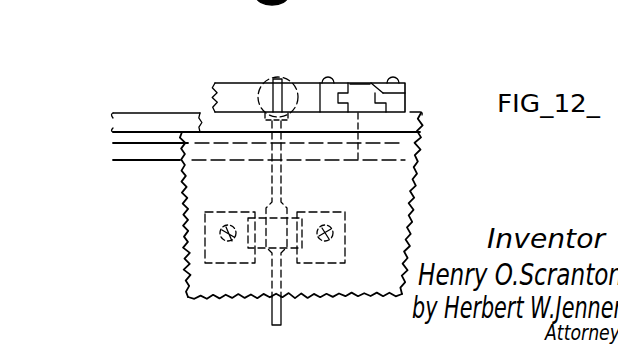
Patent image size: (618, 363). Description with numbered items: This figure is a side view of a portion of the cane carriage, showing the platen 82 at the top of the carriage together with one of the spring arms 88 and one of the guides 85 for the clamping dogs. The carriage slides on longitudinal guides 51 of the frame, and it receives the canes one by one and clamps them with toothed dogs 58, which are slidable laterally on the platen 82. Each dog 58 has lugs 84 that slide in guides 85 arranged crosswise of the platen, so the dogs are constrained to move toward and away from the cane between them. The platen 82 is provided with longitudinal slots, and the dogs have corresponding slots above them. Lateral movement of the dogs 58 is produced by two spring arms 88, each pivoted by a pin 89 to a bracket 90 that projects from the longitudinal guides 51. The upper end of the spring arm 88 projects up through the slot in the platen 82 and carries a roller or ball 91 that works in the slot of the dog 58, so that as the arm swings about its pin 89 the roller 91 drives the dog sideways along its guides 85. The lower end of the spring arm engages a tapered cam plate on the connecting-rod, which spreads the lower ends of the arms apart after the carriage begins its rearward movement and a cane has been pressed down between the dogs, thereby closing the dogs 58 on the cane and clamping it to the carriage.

The longitudinal guides 51 is at (227, 160).
The toothed dogs 58 is at (228, 95).
The platen 82 is at (137, 120).
The lugs 84 is at (362, 90).
The guides 85 is at (332, 90).
The spring arms 88 is at (283, 316).
The pins 89 is at (248, 240).
The brackets 90 is at (213, 224).
The rollers or balls 91 is at (275, 97).